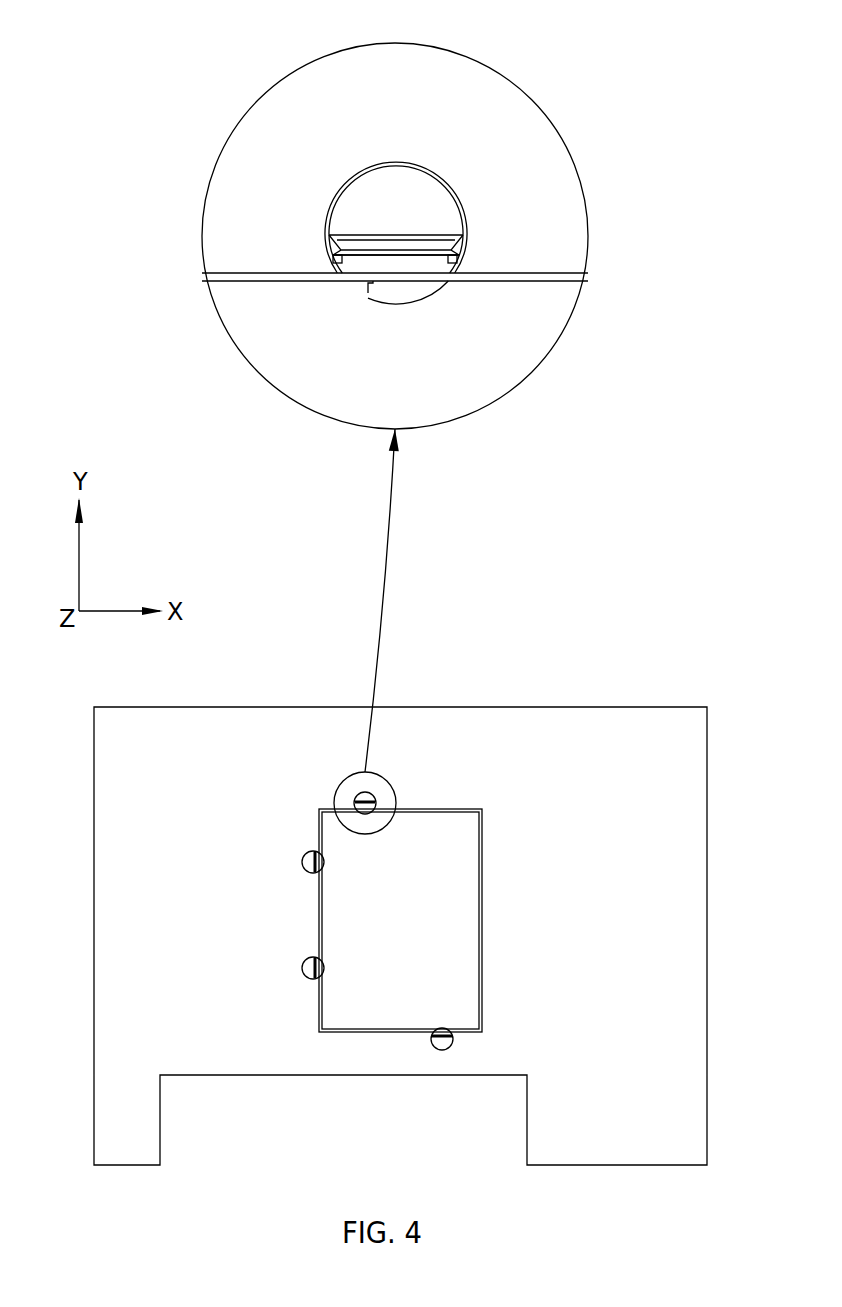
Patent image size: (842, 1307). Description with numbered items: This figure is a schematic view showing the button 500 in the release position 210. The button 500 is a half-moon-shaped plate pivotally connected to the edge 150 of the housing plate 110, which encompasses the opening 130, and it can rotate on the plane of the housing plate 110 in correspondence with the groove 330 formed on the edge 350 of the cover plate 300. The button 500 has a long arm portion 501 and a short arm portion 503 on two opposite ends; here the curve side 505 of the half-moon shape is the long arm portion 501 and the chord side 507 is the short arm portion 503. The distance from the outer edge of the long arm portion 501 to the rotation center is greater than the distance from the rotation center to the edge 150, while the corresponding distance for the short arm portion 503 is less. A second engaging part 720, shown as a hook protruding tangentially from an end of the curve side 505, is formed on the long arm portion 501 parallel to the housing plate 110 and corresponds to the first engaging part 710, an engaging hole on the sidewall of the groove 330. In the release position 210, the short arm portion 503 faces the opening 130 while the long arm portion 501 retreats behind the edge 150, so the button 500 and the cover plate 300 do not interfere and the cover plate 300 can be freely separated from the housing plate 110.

The housing plate 110 is at (570, 220).
The opening 130 is at (361, 278).
The edge of the housing plate 150 is at (275, 273).
The edge of the cover plate 350 is at (273, 282).
The release position 210 is at (340, 165).
The cover plate 300 is at (508, 347).
The groove 330 is at (402, 292).
The button 500 is at (410, 525).
The long arm portion 501 is at (395, 183).
The short arm portion 503 is at (415, 258).
The curve side 505 is at (440, 183).
The chord side 507 is at (357, 261).
The first engaging part 710 is at (368, 291).
The second engaging part 720 is at (457, 261).